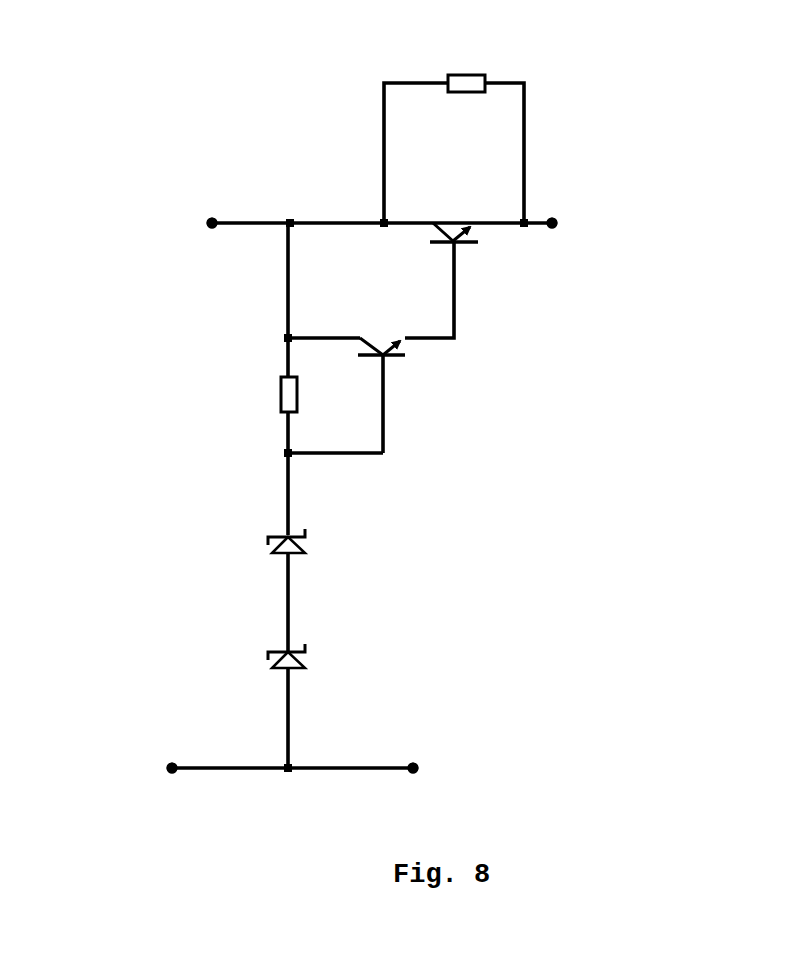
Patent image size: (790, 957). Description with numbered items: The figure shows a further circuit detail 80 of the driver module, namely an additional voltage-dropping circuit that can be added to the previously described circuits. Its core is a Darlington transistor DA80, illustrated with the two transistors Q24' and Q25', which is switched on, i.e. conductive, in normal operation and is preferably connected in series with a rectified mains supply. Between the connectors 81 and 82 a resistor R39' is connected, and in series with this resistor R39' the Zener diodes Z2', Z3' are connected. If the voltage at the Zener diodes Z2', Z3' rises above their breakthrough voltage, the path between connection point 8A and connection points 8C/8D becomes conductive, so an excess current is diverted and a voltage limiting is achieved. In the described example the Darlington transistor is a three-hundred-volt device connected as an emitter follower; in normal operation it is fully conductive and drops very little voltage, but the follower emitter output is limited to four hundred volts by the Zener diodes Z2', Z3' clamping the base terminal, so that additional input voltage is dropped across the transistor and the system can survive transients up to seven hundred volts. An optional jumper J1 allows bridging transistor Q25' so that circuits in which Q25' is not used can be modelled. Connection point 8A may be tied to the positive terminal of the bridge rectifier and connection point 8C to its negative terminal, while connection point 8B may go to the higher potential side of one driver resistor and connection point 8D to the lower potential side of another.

The circuit 80 is at (168, 134).
The connection point 8A is at (218, 222).
The connection point 8B is at (553, 218).
The connection point 8C is at (175, 765).
The connection point 8D is at (420, 765).
The connector 81 is at (288, 338).
The connector 82 is at (288, 453).
The jumper J1 is at (454, 149).
The Darlington transistor DA80 is at (474, 368).
The transistor Q25' is at (441, 259).
The transistor Q24' is at (387, 376).
The resistor R39' is at (323, 397).
The Zener diode Z2' is at (318, 545).
The Zener diode Z3' is at (318, 658).